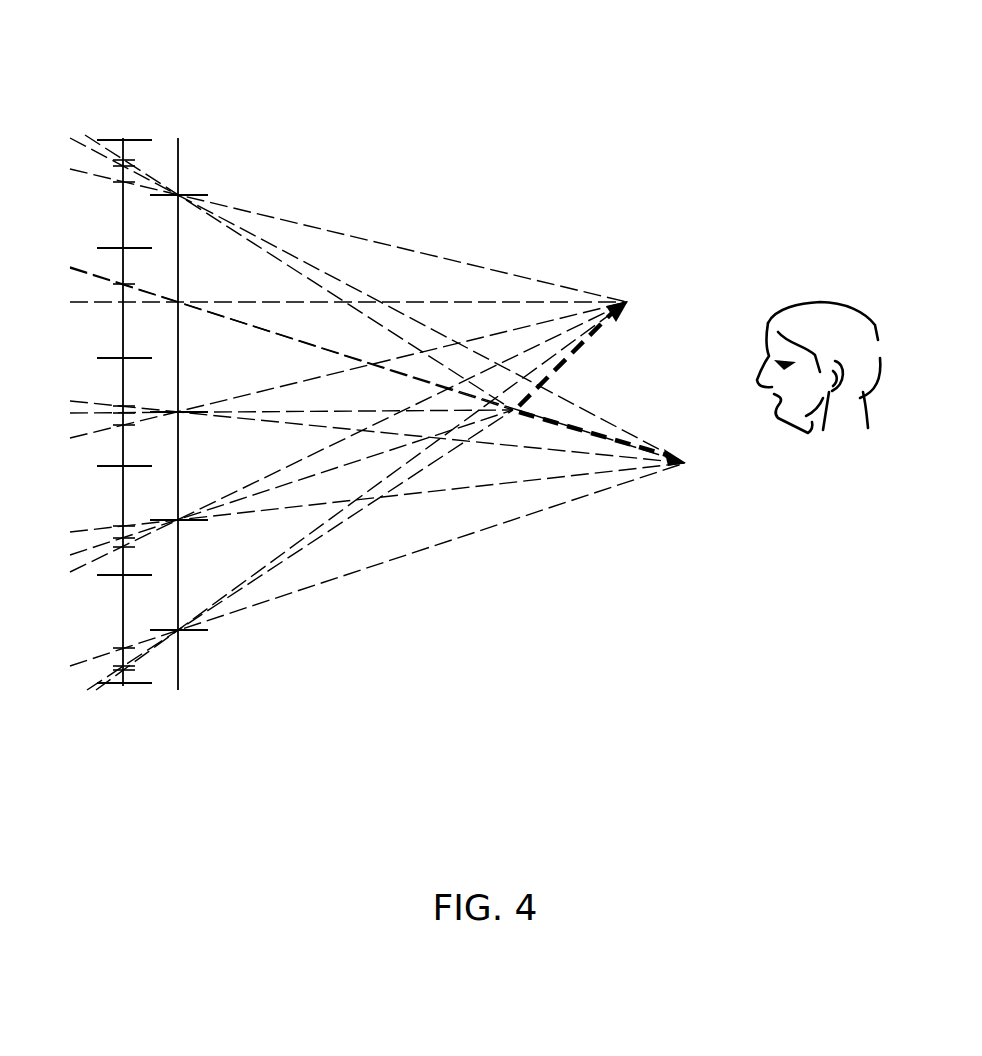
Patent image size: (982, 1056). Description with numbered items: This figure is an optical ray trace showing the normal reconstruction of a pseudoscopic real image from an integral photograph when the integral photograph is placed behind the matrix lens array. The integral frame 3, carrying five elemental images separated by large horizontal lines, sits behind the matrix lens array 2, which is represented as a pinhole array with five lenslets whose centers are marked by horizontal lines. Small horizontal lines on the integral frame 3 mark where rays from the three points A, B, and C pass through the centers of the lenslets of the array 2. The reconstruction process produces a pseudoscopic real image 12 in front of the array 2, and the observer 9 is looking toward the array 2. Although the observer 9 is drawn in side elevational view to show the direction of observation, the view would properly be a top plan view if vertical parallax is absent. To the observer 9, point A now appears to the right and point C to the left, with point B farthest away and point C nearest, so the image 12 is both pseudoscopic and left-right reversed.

The integral frame 3 is at (133, 100).
The matrix lens array 2 is at (250, 166).
The pseudoscopic real image 12 is at (654, 372).
The observer 9 is at (820, 473).